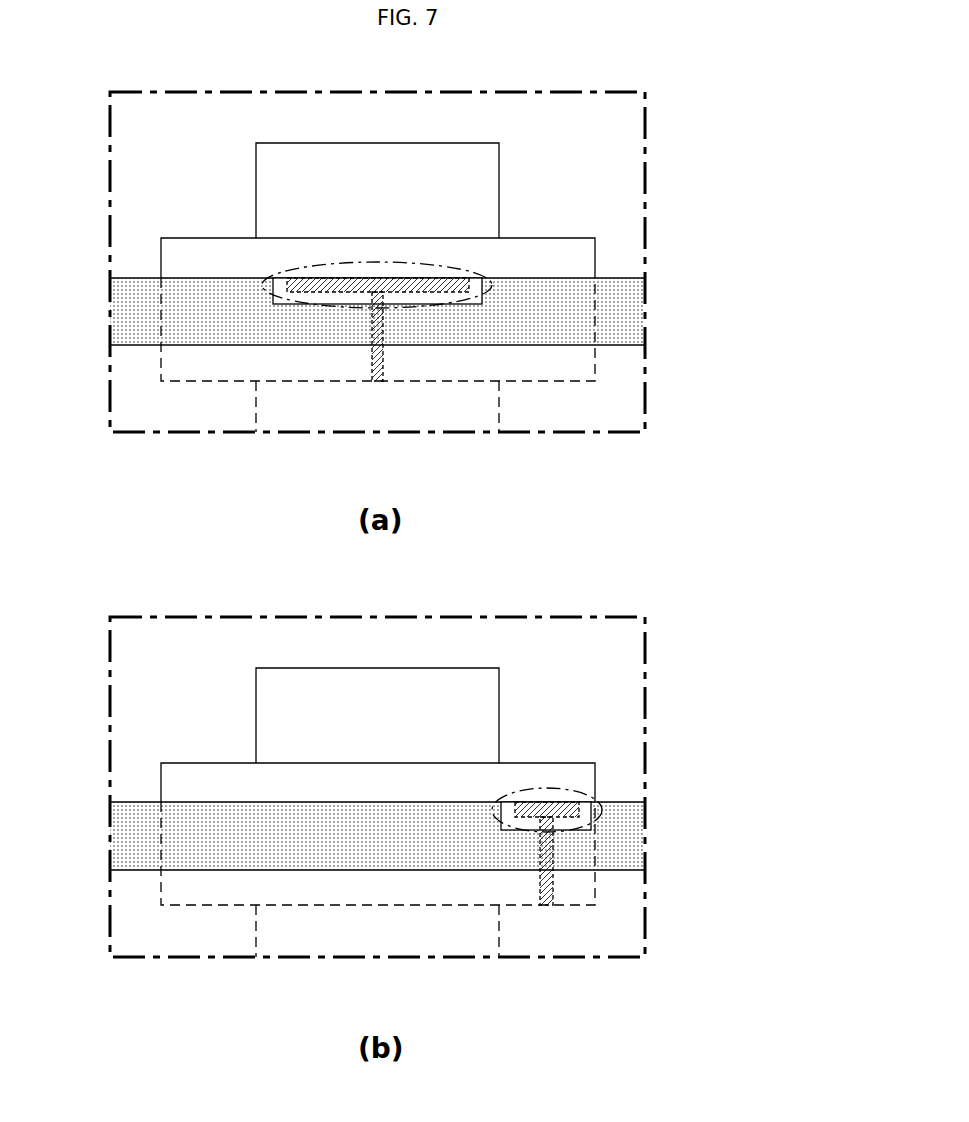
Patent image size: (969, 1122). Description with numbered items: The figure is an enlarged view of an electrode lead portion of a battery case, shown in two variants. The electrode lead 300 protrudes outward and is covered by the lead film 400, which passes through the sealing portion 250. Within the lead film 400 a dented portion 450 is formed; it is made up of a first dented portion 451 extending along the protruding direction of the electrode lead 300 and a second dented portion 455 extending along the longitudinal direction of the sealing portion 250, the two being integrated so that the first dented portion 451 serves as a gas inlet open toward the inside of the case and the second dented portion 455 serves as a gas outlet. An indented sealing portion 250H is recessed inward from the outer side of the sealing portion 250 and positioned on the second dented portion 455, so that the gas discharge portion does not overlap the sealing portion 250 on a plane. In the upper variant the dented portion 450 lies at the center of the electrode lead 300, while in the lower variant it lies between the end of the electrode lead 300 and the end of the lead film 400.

The electrode lead 300 is at (263, 185).
The lead film 400 is at (168, 257).
The sealing portion 250 is at (117, 312).
The indented sealing portion 250H is at (428, 265).
The second dented portion 455 is at (317, 293).
The first dented portion 451 is at (370, 365).
The dented portion 450 is at (372, 482).